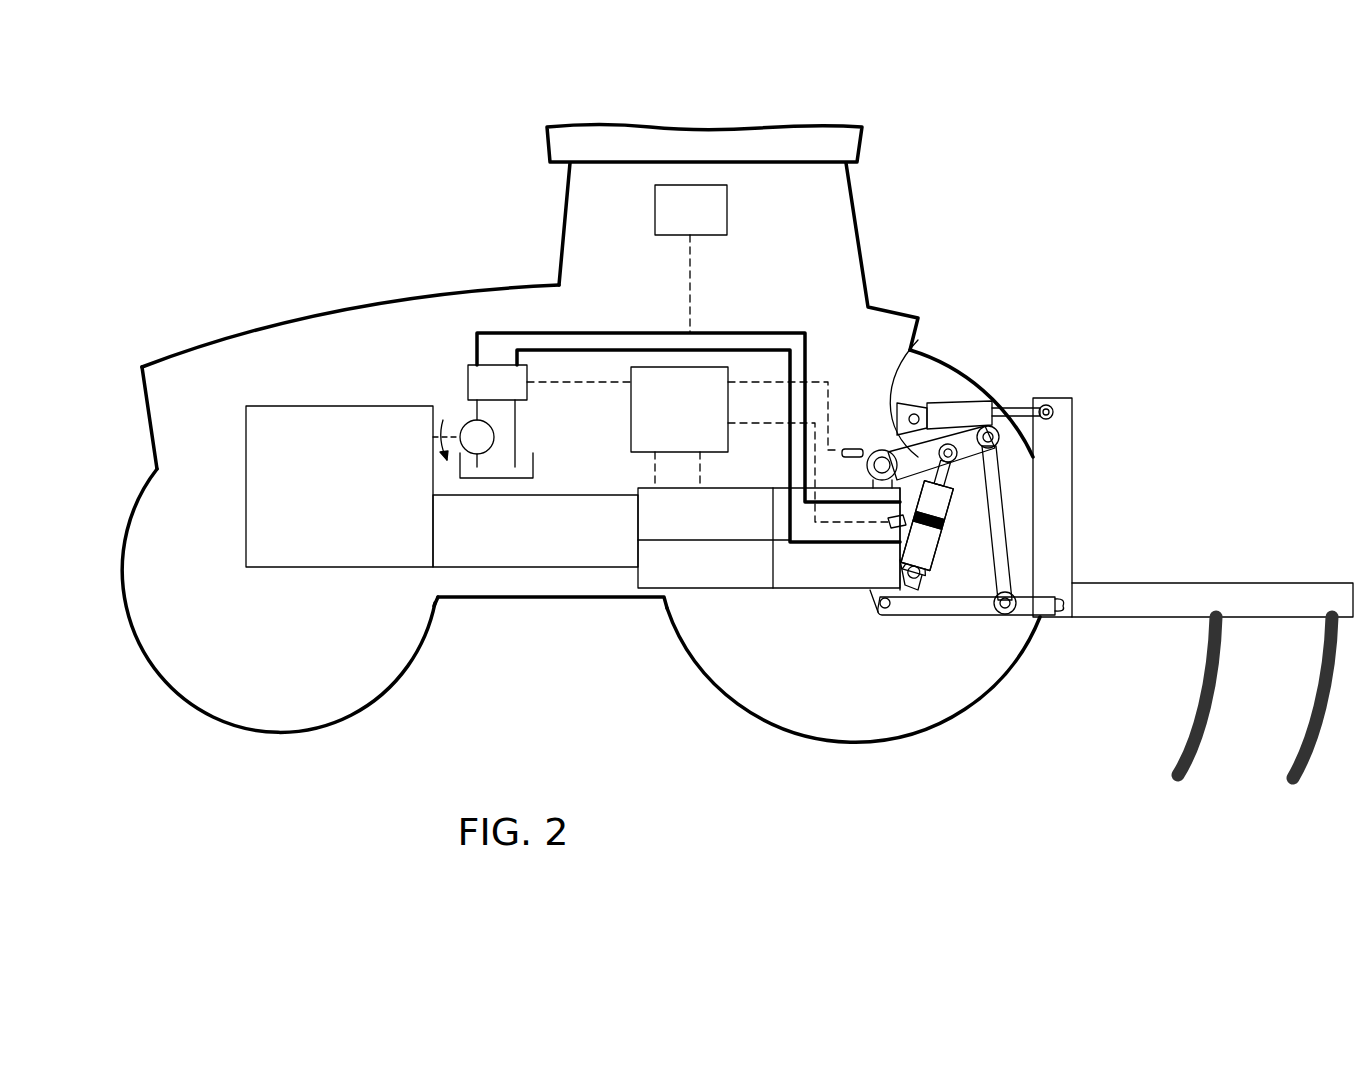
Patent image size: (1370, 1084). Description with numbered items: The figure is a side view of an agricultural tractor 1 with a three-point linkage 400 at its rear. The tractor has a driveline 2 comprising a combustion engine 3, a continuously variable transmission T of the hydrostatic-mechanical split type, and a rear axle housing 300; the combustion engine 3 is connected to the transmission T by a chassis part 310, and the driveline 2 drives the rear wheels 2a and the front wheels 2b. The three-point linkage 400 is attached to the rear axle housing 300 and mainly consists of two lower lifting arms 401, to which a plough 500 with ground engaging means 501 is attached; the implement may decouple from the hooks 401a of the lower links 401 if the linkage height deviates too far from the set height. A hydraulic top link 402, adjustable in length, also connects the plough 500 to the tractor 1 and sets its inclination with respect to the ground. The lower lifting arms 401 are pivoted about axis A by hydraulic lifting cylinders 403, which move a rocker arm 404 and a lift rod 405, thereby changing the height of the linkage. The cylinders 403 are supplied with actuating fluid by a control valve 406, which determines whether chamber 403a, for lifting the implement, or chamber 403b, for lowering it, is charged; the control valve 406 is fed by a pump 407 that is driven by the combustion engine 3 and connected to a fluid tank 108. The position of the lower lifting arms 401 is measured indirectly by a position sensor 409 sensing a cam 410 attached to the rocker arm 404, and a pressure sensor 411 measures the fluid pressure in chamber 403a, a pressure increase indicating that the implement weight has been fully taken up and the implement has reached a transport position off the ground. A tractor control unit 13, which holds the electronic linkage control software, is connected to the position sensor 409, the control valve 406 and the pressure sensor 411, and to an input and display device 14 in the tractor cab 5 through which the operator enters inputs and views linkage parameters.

The agricultural tractor 1 is at (265, 218).
The driveline 2 is at (577, 575).
The rear wheels 2a is at (773, 710).
The front wheels 2b is at (262, 720).
The combustion engine 3 is at (362, 488).
The tractor cab 5 is at (588, 228).
The tractor control unit 13 is at (650, 387).
The input and display device 14 is at (695, 218).
The fluid tank 108 is at (533, 477).
The rear axle housing 300 is at (852, 569).
The chassis part 310 is at (508, 530).
The three-point linkage 400 is at (1017, 372).
The lower lifting arms 401 is at (972, 617).
The hooks 401a is at (1050, 620).
The top link 402 is at (967, 380).
The hydraulic lifting cylinders 403 is at (975, 487).
The chamber 403a is at (927, 543).
The chamber 403b is at (940, 503).
The rocker arm 404 is at (960, 412).
The lift rod 405 is at (1005, 555).
The control valve 406 is at (495, 382).
The pump 407 is at (477, 432).
The position sensor 409 is at (848, 447).
The cam 410 is at (875, 452).
The pressure sensor 411 is at (890, 523).
The plough 500 is at (1212, 603).
The ground engaging means 501 is at (1173, 782).
The continuously variable transmission T is at (662, 558).
The axis A is at (880, 605).